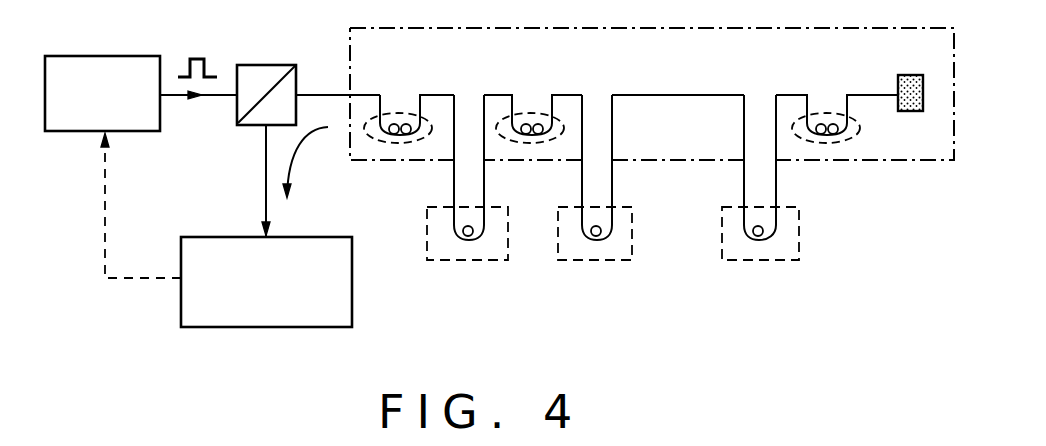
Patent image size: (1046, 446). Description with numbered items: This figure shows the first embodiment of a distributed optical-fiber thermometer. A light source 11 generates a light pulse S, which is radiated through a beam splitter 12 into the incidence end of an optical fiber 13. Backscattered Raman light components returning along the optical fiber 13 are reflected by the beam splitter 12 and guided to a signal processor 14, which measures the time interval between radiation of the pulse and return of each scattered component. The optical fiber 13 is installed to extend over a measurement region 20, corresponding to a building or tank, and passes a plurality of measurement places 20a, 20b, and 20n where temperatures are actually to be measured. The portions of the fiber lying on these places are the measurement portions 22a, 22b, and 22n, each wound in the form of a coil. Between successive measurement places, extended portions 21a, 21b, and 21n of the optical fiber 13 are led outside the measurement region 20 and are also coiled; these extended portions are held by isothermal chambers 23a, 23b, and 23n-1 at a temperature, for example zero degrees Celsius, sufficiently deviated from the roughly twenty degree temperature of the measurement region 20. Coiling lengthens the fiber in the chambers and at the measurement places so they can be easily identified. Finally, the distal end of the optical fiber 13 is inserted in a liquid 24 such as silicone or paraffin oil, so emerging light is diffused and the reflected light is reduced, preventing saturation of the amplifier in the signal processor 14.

The light source 11 is at (112, 56).
The light pulse S is at (200, 58).
The beam splitter 12 is at (270, 65).
The optical fiber 13 is at (322, 92).
The signal processor 14 is at (354, 313).
The measurement region 20 is at (528, 28).
The measurement place 20a is at (399, 111).
The measurement place 20b is at (529, 111).
The measurement place 20n is at (825, 108).
The extended portion 21a is at (454, 227).
The extended portion 21b is at (614, 226).
The extended portion 21n is at (778, 226).
The measurement portion 22a is at (398, 145).
The measurement portion 22b is at (530, 145).
The measurement portion 22n is at (830, 145).
The isothermal chamber 23a is at (470, 262).
The isothermal chamber 23b is at (595, 262).
The isothermal chamber 23n-1 is at (748, 262).
The liquid 24 is at (913, 75).